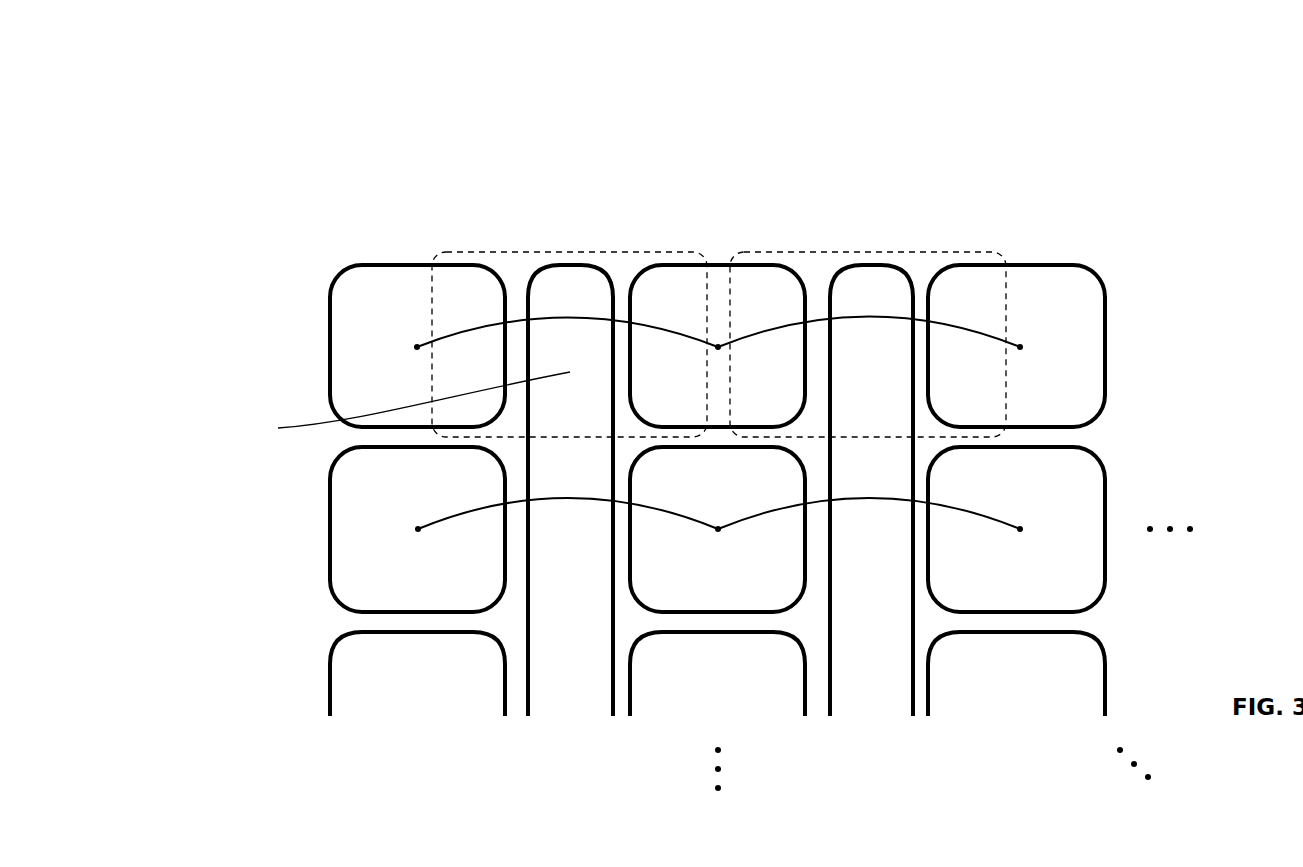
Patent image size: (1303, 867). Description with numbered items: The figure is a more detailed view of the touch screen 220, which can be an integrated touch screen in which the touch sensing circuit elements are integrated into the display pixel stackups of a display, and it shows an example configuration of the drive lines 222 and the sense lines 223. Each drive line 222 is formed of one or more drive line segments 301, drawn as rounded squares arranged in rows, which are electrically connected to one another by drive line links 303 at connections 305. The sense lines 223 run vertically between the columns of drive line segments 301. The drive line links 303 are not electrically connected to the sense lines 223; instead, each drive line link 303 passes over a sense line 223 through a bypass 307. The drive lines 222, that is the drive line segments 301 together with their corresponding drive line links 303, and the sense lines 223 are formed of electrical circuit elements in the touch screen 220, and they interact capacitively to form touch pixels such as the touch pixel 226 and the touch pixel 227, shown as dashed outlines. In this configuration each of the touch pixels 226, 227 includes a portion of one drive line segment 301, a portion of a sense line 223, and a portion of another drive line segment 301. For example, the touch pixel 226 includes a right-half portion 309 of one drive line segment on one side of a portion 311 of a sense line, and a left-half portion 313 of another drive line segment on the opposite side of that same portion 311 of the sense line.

The touch screen 220 is at (263, 163).
The drive line 222 is at (300, 527).
The sense line 223 is at (877, 265).
The touch pixel 226 is at (510, 251).
The touch pixel 227 is at (800, 252).
The drive line segment 301 is at (370, 265).
The drive line link 303 is at (952, 322).
The connection 305 is at (407, 346).
The bypass 307 is at (593, 302).
The right-half portion of a drive line segment 309 is at (458, 290).
The portion of a sense line 311 is at (405, 407).
The left-half portion of a drive line segment 313 is at (672, 293).